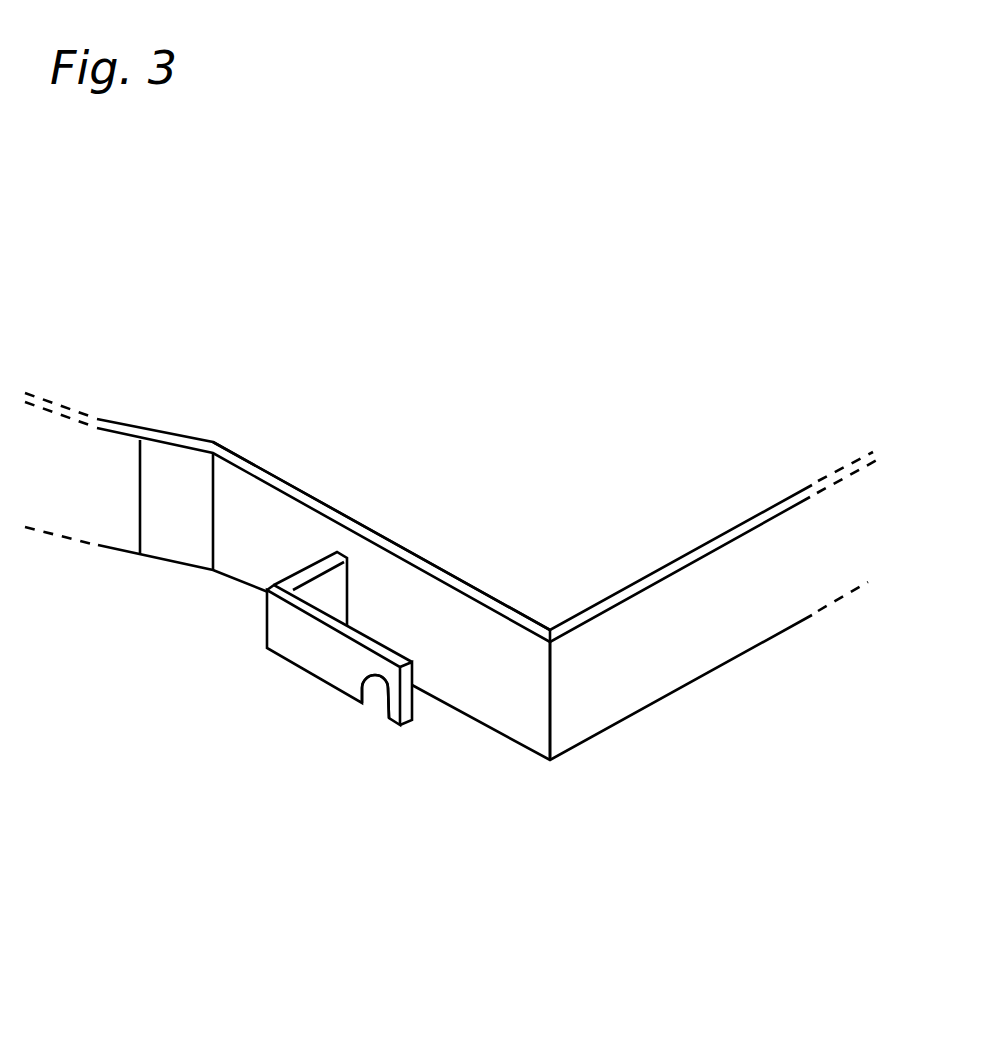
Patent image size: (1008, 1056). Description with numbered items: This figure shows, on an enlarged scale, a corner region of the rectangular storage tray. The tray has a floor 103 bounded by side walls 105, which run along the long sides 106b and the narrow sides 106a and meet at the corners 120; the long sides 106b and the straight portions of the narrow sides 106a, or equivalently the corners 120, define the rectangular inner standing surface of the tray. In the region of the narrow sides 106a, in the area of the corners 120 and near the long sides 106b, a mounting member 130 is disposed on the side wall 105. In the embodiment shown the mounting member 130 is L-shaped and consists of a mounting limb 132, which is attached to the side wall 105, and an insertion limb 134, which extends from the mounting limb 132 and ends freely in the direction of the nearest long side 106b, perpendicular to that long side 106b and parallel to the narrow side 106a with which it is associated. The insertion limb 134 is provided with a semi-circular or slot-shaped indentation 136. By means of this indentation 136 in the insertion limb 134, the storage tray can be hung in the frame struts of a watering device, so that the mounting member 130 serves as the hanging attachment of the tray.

The floor 103 is at (531, 479).
The side walls 105 is at (450, 573).
The narrow sides 106a is at (151, 620).
The long sides 106b is at (795, 647).
The corners 120 is at (553, 790).
The mounting member 130 is at (302, 632).
The mounting limb 132 is at (317, 568).
The insertion limb 134 is at (332, 665).
The indentation 136 is at (372, 725).